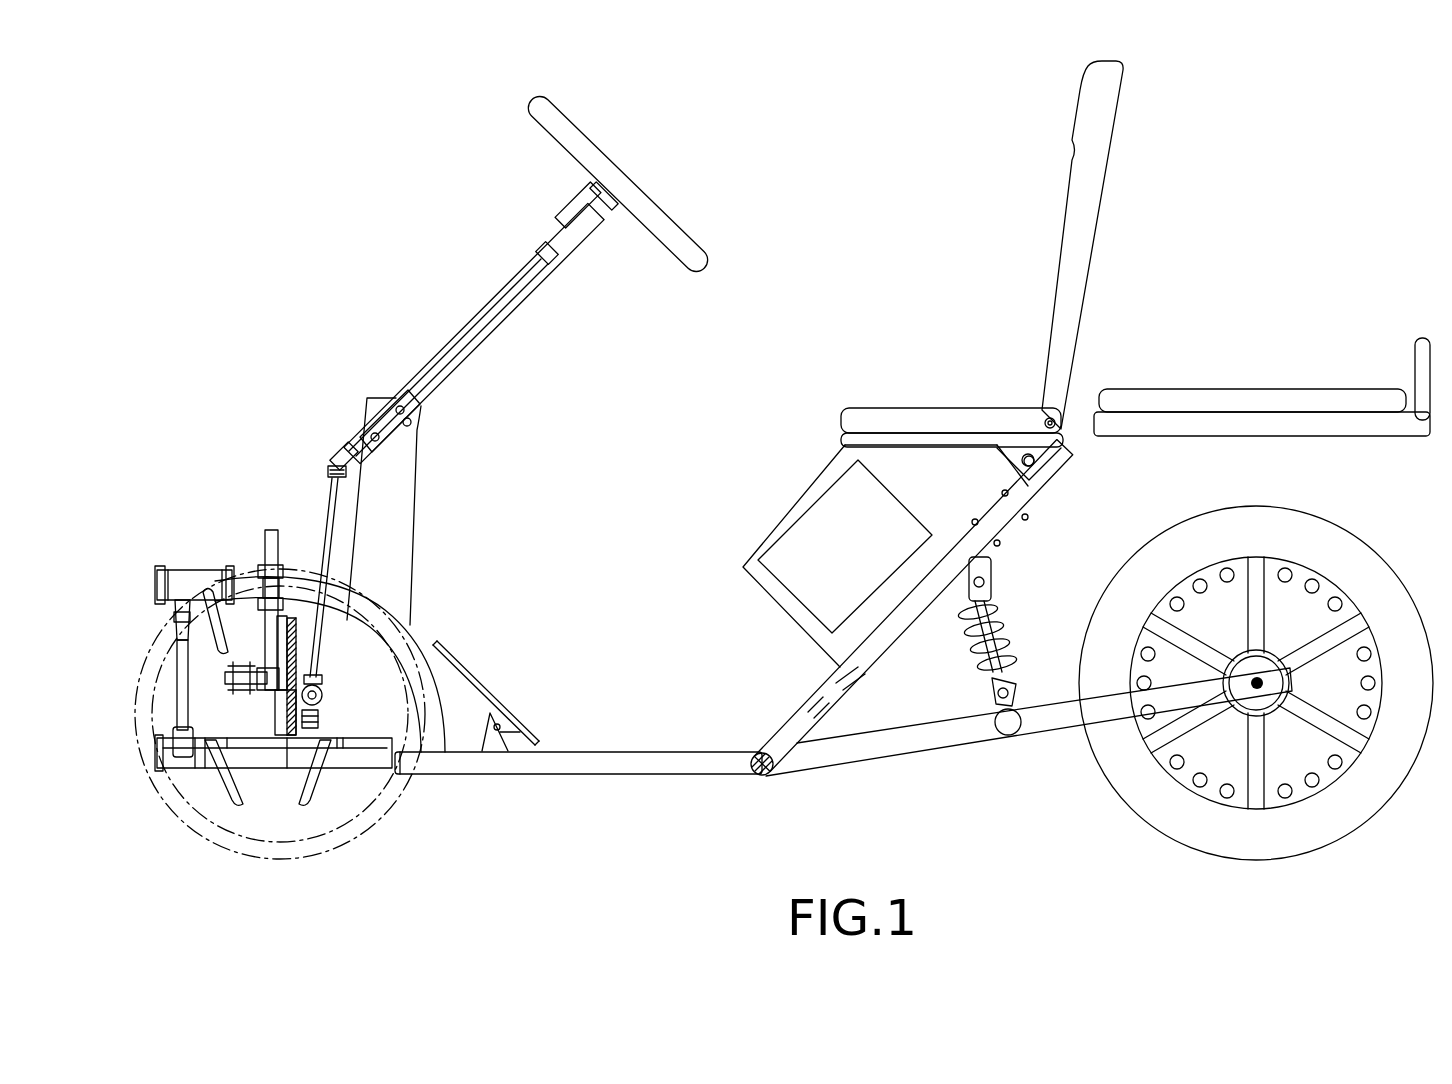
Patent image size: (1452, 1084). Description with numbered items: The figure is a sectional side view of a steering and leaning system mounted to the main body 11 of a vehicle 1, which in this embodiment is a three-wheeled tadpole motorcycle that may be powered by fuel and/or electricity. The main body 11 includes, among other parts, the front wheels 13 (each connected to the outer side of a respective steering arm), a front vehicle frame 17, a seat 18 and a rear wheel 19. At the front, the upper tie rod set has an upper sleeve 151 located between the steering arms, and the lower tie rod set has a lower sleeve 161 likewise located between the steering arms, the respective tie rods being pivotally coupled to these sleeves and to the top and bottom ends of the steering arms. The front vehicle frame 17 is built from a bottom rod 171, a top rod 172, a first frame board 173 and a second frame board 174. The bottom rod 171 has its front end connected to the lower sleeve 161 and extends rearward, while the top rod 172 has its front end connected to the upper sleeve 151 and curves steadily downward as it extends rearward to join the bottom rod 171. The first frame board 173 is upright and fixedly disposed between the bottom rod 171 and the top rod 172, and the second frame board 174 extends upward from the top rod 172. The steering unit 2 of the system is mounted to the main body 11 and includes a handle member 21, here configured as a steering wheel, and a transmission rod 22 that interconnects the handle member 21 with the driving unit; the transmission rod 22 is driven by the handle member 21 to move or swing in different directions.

The vehicle 1 is at (735, 202).
The steering unit 2 is at (482, 278).
The handle member 21 is at (553, 122).
The transmission rod 22 is at (323, 490).
The main body 11 is at (627, 728).
The front wheel 13 is at (375, 800).
The upper sleeve 151 is at (205, 573).
The lower sleeve 161 is at (266, 766).
The front vehicle frame 17 is at (589, 781).
The bottom rod 171 is at (470, 767).
The top rod 172 is at (372, 602).
The first frame board 173 is at (296, 735).
The second frame board 174 is at (405, 468).
The seat 18 is at (1084, 241).
The rear wheel 19 is at (1348, 820).